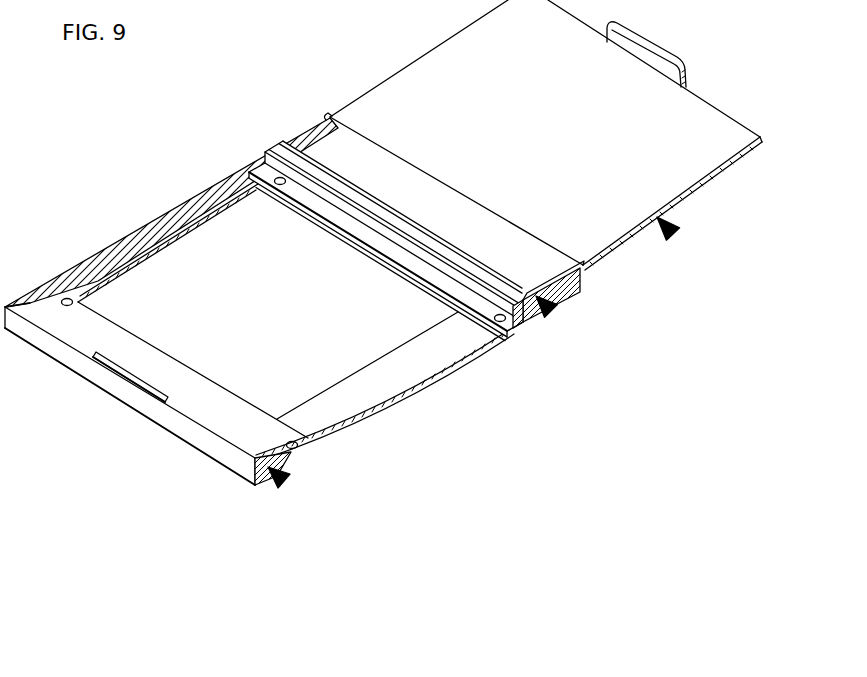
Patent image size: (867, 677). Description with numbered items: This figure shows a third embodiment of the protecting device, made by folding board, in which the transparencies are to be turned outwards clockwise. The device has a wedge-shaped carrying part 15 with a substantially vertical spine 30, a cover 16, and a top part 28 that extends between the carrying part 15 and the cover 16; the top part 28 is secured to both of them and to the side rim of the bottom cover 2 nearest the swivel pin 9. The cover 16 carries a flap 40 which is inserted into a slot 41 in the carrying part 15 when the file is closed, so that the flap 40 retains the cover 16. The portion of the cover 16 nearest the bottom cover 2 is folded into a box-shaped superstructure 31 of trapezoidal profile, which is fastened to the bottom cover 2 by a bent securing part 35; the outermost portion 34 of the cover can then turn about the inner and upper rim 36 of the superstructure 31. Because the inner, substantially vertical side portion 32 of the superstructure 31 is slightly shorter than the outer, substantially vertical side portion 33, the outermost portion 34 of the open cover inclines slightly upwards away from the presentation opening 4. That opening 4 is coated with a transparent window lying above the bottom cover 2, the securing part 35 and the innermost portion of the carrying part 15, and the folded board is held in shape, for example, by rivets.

The bottom cover 2 is at (457, 343).
The presentation opening 4 is at (355, 350).
The swivel pin 9 is at (65, 298).
The carrying part 15 is at (284, 481).
The cover 16 is at (673, 234).
The top part 28 is at (155, 233).
The spine 30 is at (200, 438).
The box-shaped superstructure 31 is at (551, 311).
The inner side portion 32 is at (522, 322).
The outer side portion 33 is at (583, 278).
The outermost portion of the cover 34 is at (415, 88).
The securing part 35 is at (285, 153).
The inner and upper rim 36 is at (317, 166).
The flap 40 is at (680, 50).
The slot 41 is at (113, 372).